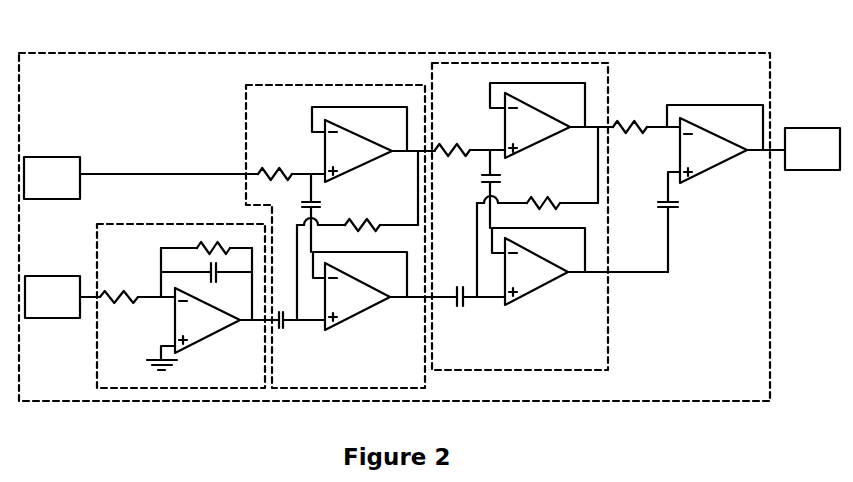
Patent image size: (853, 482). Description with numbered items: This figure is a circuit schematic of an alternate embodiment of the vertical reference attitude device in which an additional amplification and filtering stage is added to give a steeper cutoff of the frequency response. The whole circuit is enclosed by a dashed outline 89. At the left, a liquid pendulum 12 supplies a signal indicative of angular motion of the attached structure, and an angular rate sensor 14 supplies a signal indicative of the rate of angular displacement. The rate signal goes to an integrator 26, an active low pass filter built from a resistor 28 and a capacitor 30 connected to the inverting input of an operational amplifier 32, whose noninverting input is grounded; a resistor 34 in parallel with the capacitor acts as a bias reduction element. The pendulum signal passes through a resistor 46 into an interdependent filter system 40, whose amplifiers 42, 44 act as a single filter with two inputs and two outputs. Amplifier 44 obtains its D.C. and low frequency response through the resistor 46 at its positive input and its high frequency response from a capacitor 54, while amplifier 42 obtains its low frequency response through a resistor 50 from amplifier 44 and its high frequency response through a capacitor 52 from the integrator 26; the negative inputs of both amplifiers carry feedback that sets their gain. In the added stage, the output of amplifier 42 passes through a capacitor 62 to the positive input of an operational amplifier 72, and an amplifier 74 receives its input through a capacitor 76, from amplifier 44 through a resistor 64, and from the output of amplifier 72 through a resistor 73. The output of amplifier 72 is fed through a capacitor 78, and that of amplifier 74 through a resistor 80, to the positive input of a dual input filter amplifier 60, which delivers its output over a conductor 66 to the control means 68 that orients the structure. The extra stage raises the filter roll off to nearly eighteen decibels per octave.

The liquid pendulum 12 is at (65, 154).
The angular rate sensor 14 is at (62, 273).
The integrator 26 is at (140, 220).
The resistor 28 is at (118, 305).
The capacitor 30 is at (213, 282).
The operational amplifier 32 is at (213, 335).
The resistor 34 is at (213, 238).
The interdependent filter system 40 is at (242, 130).
The amplifier 42 is at (362, 317).
The amplifier 44 is at (363, 168).
The resistor 46 is at (268, 163).
The resistor 50 is at (363, 232).
The capacitor 52 is at (287, 333).
The capacitor 54 is at (323, 206).
The amplifier 60 is at (695, 182).
The capacitor 62 is at (467, 308).
The resistor 64 is at (447, 140).
The conductor 66 is at (757, 155).
The control means 68 is at (820, 122).
The operational amplifier 72 is at (542, 295).
The resistor 73 is at (543, 210).
The amplifier 74 is at (542, 145).
The capacitor 76 is at (503, 180).
The capacitor 78 is at (680, 208).
The resistor 80 is at (623, 115).
The signal processing circuit 89 is at (298, 52).